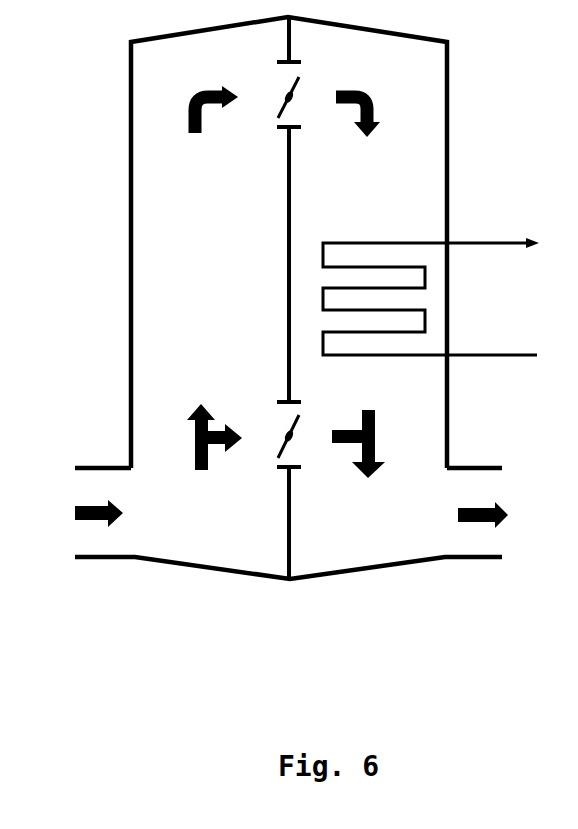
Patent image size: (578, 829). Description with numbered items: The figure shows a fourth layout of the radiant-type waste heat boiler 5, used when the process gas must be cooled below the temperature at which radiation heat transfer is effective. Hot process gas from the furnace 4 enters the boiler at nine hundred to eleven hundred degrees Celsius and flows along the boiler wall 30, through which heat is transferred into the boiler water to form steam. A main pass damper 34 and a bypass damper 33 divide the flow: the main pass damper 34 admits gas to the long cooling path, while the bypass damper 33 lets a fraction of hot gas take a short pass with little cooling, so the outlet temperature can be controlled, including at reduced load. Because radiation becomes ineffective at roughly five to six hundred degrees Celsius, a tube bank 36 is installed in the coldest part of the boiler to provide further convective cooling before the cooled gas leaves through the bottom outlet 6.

The furnace 4 is at (82, 514).
The waste heat boiler 5 is at (288, 247).
The bottom outlet 6 is at (498, 516).
The boiler wall 30 is at (268, 216).
The bypass damper 33 is at (244, 426).
The main pass damper 34 is at (248, 91).
The tube bank 36 is at (431, 274).